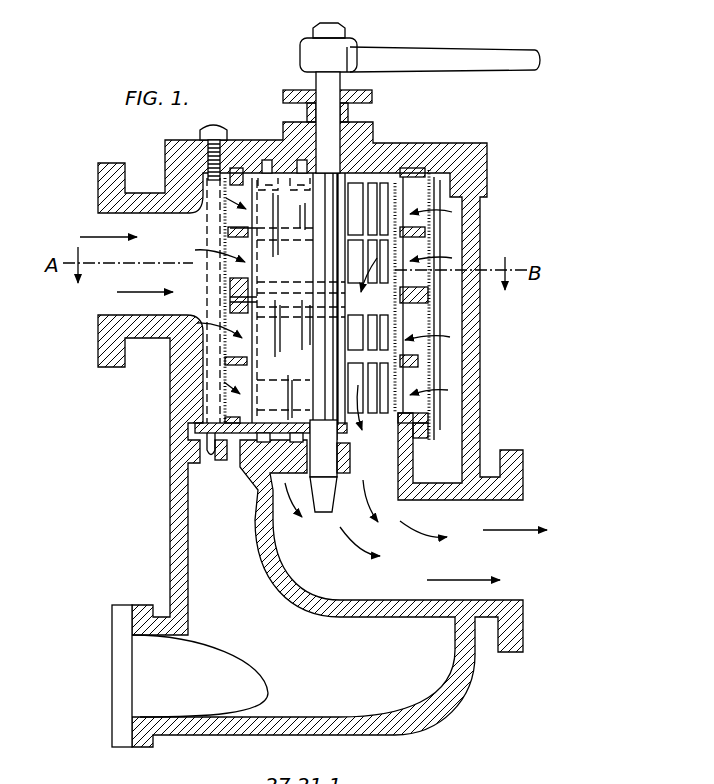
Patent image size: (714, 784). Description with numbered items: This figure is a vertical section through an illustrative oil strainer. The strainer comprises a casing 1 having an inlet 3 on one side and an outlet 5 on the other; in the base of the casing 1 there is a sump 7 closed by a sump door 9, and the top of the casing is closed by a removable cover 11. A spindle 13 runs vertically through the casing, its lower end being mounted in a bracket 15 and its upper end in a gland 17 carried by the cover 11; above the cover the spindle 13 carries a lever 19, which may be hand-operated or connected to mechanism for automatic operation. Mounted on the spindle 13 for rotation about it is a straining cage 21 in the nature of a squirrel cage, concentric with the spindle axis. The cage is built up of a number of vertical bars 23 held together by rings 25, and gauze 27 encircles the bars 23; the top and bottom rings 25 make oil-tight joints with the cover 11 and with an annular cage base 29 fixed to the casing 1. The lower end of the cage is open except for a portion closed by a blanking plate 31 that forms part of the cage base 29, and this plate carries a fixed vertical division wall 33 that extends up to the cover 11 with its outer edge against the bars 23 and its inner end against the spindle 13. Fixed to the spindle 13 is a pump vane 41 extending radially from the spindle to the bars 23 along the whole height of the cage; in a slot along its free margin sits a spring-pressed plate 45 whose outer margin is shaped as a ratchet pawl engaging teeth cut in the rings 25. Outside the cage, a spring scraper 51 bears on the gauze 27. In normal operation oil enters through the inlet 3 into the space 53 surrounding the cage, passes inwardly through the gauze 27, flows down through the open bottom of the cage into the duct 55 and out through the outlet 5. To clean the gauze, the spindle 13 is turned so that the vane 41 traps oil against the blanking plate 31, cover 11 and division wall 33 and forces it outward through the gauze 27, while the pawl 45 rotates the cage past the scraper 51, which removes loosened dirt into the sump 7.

The casing 1 is at (190, 462).
The inlet 3 is at (112, 297).
The outlet 5 is at (497, 548).
The sump 7 is at (250, 676).
The sump door 9 is at (130, 672).
The removable cover 11 is at (457, 157).
The spindle 13 is at (320, 462).
The bracket 15 is at (295, 468).
The gland 17 is at (345, 113).
The lever 19 is at (483, 60).
The cage 21 is at (405, 329).
The vertical bars 23 is at (402, 384).
The rings 25 is at (422, 168).
The gauze 27 is at (430, 409).
The annular cage base 29 is at (400, 440).
The blanking plate 31 is at (242, 478).
The fixed vertical division wall 33 is at (305, 324).
The pump vane 41 is at (340, 269).
The plate 45 is at (335, 397).
The spring scraper 51 is at (218, 391).
The space surrounding the cage 53 is at (222, 355).
The duct 55 is at (369, 368).